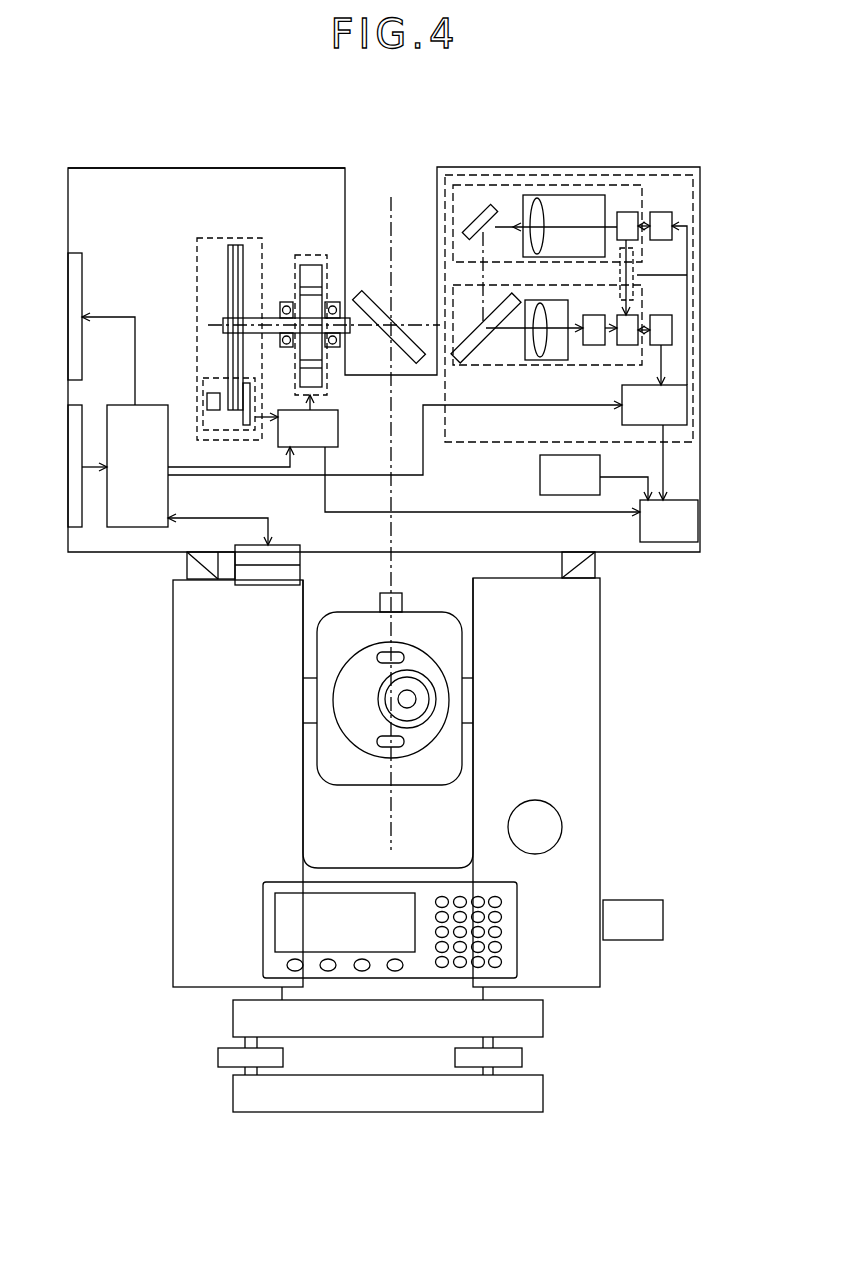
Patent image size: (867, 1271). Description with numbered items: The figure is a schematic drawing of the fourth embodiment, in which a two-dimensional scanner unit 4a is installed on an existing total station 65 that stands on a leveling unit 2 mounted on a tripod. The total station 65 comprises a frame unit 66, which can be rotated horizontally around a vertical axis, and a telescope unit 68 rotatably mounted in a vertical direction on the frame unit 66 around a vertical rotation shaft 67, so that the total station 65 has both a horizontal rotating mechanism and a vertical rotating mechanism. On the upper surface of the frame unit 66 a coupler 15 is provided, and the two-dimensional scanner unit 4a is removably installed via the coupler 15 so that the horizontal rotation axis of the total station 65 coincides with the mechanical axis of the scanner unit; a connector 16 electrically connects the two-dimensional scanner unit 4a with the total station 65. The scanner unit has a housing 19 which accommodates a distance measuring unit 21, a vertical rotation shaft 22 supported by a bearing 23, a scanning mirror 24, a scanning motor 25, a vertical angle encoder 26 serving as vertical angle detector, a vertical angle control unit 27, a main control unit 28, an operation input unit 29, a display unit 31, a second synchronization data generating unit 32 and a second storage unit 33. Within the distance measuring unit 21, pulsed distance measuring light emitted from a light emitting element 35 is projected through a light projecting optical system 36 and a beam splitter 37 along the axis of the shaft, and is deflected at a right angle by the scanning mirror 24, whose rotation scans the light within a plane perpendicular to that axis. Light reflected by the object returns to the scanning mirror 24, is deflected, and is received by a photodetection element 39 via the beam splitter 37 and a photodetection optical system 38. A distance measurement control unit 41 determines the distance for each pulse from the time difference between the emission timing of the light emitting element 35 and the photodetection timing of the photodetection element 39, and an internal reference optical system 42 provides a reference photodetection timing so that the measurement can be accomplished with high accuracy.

The leveling unit 2 is at (543, 1018).
The two-dimensional scanner unit 4a is at (269, 165).
The coupler 15 is at (187, 566).
The connector 16 is at (300, 569).
The housing 19 is at (160, 167).
The distance measuring unit 21 is at (497, 166).
The vertical rotation shaft 22 is at (350, 334).
The bearing 23 is at (290, 301).
The scanning mirror 24 is at (376, 296).
The scanning motor 25 is at (311, 255).
The vertical angle encoder 26 is at (225, 238).
The vertical angle control unit 27 is at (338, 440).
The main control unit 28 is at (148, 404).
The operation input unit 29 is at (68, 473).
The display unit 31 is at (68, 292).
The second synchronization data generating unit 32 is at (540, 482).
The second storage unit 33 is at (680, 499).
The light emitting element 35 is at (662, 212).
The light projecting optical system 36 is at (560, 185).
The beam splitter 37 is at (470, 368).
The photodetection optical system 38 is at (552, 367).
The photodetection element 39 is at (674, 330).
The distance measurement control unit 41 is at (622, 418).
The internal reference optical system 42 is at (690, 276).
The total station 65 is at (603, 722).
The frame unit 66 is at (173, 745).
The vertical rotation shaft 67 is at (463, 676).
The telescope unit 68 is at (460, 614).